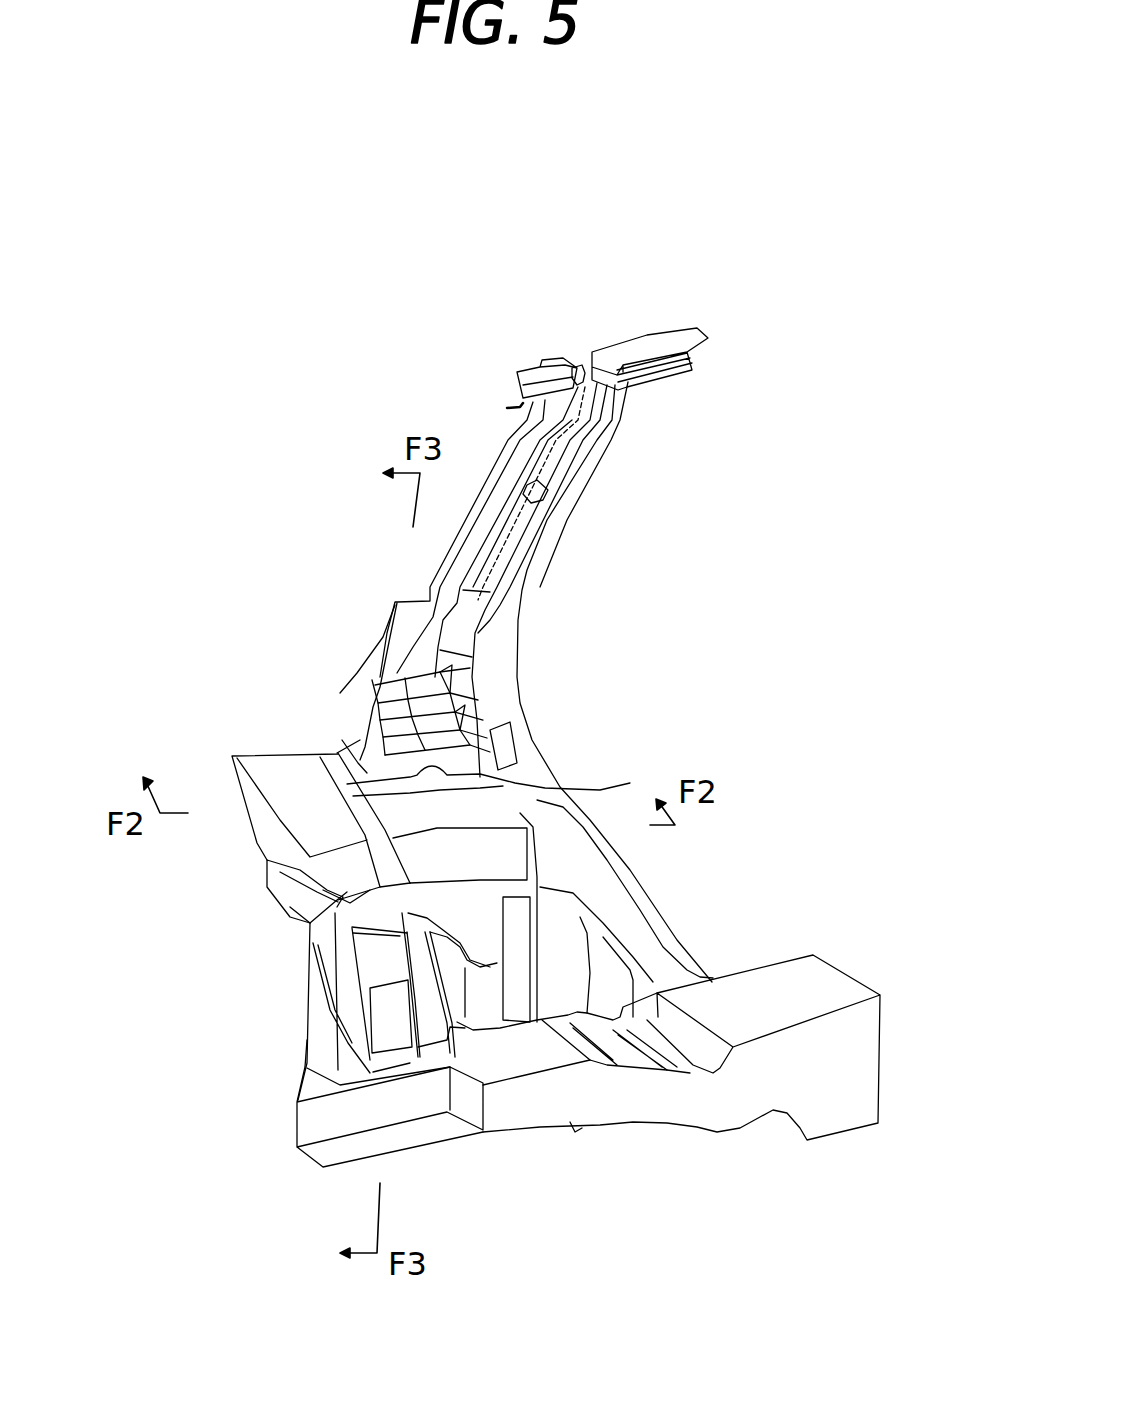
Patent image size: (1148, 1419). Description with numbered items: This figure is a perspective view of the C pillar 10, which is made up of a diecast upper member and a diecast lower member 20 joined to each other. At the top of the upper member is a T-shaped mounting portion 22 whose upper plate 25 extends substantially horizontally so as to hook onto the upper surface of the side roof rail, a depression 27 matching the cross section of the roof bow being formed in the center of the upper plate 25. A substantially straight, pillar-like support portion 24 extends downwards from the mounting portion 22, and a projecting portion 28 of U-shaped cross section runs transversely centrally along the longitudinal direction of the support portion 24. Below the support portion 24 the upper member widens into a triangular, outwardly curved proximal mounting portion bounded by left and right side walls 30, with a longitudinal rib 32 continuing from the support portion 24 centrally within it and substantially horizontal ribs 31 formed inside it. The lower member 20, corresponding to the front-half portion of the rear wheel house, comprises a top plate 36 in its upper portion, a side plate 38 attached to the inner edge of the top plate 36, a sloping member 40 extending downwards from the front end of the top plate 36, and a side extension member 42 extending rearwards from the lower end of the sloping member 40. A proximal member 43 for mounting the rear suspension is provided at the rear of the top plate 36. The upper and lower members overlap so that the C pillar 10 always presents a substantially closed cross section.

The C pillar 10 is at (740, 517).
The lower member 20 is at (727, 833).
The mounting portion 22 is at (506, 346).
The support portion 24 is at (596, 473).
The upper plate 25 is at (665, 345).
The depression 27 is at (583, 370).
The projecting portion 28 is at (497, 537).
The side walls 30 is at (357, 702).
The ribs 31 is at (465, 700).
The rib 32 is at (433, 647).
The top plate 36 is at (463, 807).
The side plate 38 is at (483, 993).
The sloping member 40 is at (623, 917).
The side extension member 42 is at (670, 1102).
The proximal member 43 is at (277, 770).